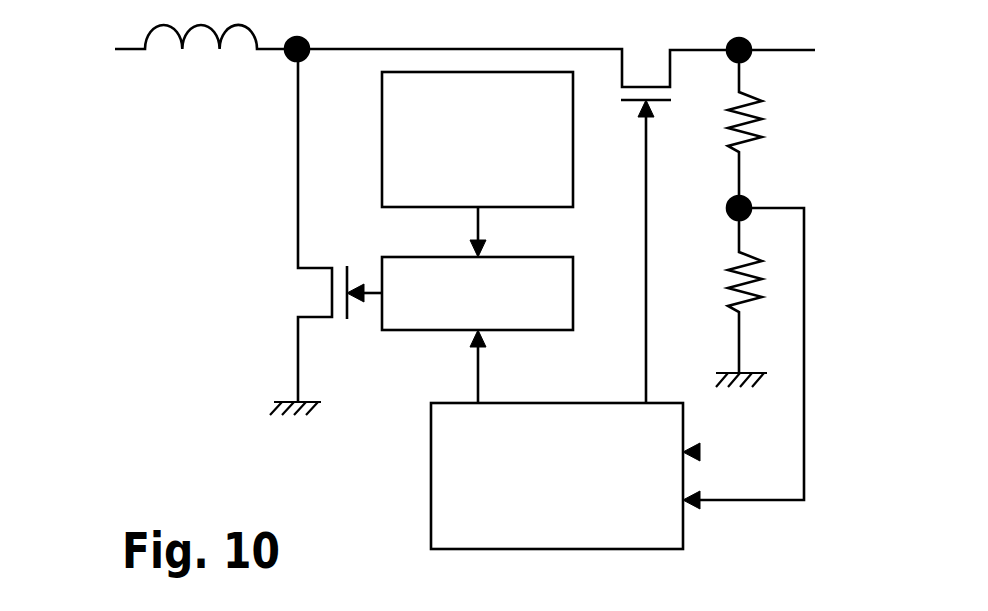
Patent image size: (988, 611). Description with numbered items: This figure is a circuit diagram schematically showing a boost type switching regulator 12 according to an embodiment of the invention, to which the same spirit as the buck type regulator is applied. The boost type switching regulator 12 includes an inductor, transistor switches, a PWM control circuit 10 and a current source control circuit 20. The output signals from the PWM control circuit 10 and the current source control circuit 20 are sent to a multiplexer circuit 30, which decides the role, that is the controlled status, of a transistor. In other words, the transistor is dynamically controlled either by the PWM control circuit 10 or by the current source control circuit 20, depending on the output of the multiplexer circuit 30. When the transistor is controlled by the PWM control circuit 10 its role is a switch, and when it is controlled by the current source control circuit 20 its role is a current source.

The boost type switching regulator 12 is at (147, 193).
The current source control circuit 20 is at (497, 180).
The multiplexer circuit 30 is at (549, 313).
The PWM control circuit 10 is at (576, 515).